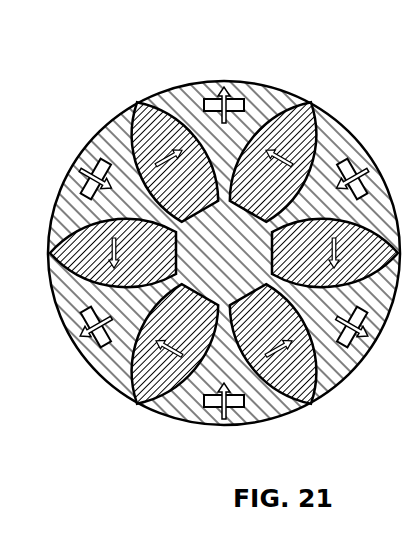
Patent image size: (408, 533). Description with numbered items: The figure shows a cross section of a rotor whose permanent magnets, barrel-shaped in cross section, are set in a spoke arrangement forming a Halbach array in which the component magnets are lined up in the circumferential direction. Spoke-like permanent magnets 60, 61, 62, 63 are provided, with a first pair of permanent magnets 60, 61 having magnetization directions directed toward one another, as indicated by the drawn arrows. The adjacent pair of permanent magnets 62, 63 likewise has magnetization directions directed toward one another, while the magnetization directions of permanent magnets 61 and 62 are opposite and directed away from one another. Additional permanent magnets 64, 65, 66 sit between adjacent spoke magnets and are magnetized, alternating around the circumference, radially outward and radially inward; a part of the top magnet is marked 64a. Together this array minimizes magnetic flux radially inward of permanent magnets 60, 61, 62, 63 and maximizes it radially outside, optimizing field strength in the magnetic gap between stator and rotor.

The permanent magnet 60 is at (320, 108).
The permanent magnet 61 is at (138, 110).
The permanent magnet 62 is at (50, 246).
The permanent magnet 63 is at (134, 389).
The additional permanent magnet 64 is at (209, 76).
The actuator plate 64a is at (206, 98).
The additional permanent magnet 65 is at (81, 167).
The additional permanent magnet 66 is at (88, 344).